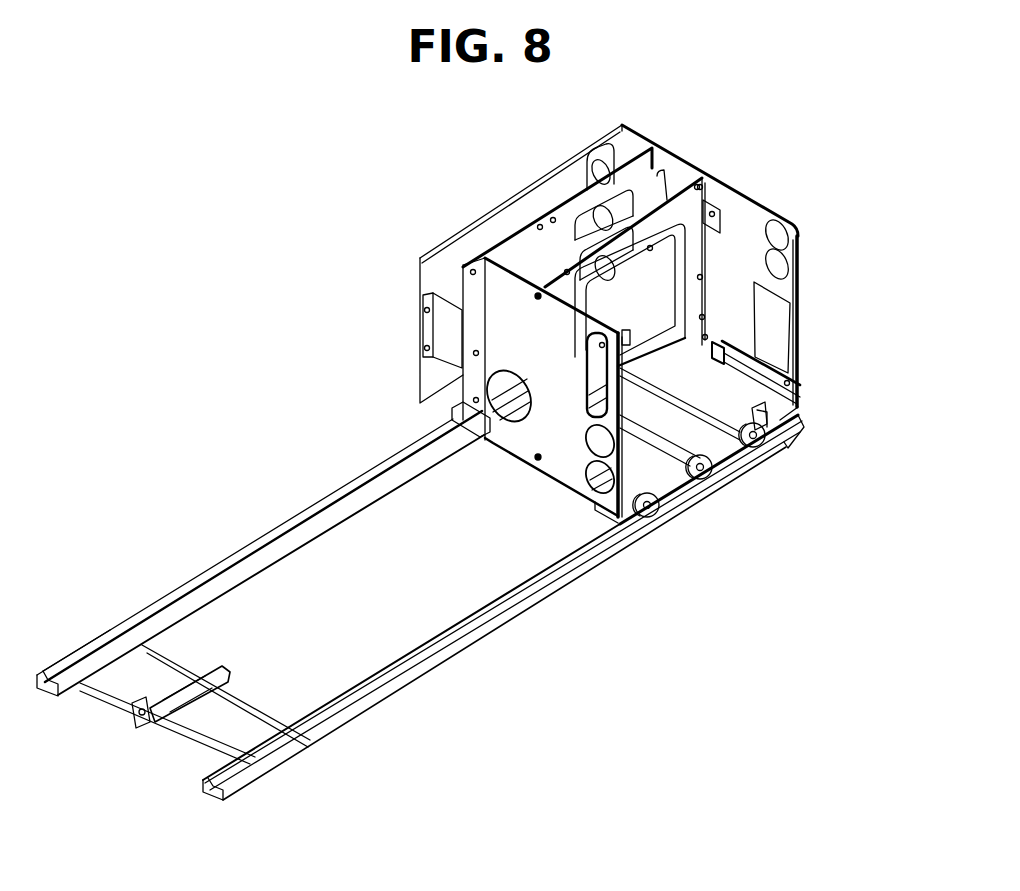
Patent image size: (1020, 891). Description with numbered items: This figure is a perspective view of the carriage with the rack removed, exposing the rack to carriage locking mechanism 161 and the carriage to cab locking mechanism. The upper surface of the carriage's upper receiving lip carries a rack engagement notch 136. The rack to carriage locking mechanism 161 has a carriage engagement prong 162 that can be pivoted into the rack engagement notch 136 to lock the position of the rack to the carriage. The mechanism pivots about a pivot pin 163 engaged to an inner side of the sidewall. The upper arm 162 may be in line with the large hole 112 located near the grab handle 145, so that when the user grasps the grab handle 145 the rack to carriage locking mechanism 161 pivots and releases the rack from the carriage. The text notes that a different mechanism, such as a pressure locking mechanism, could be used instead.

The large hole 112 is at (768, 314).
The grab handle 145 is at (803, 313).
The rack to carriage locking mechanism 161 is at (787, 353).
The carriage engagement prong 162 is at (718, 338).
The pivot pin 163 is at (799, 388).
The rack engagement notch 136 is at (723, 366).